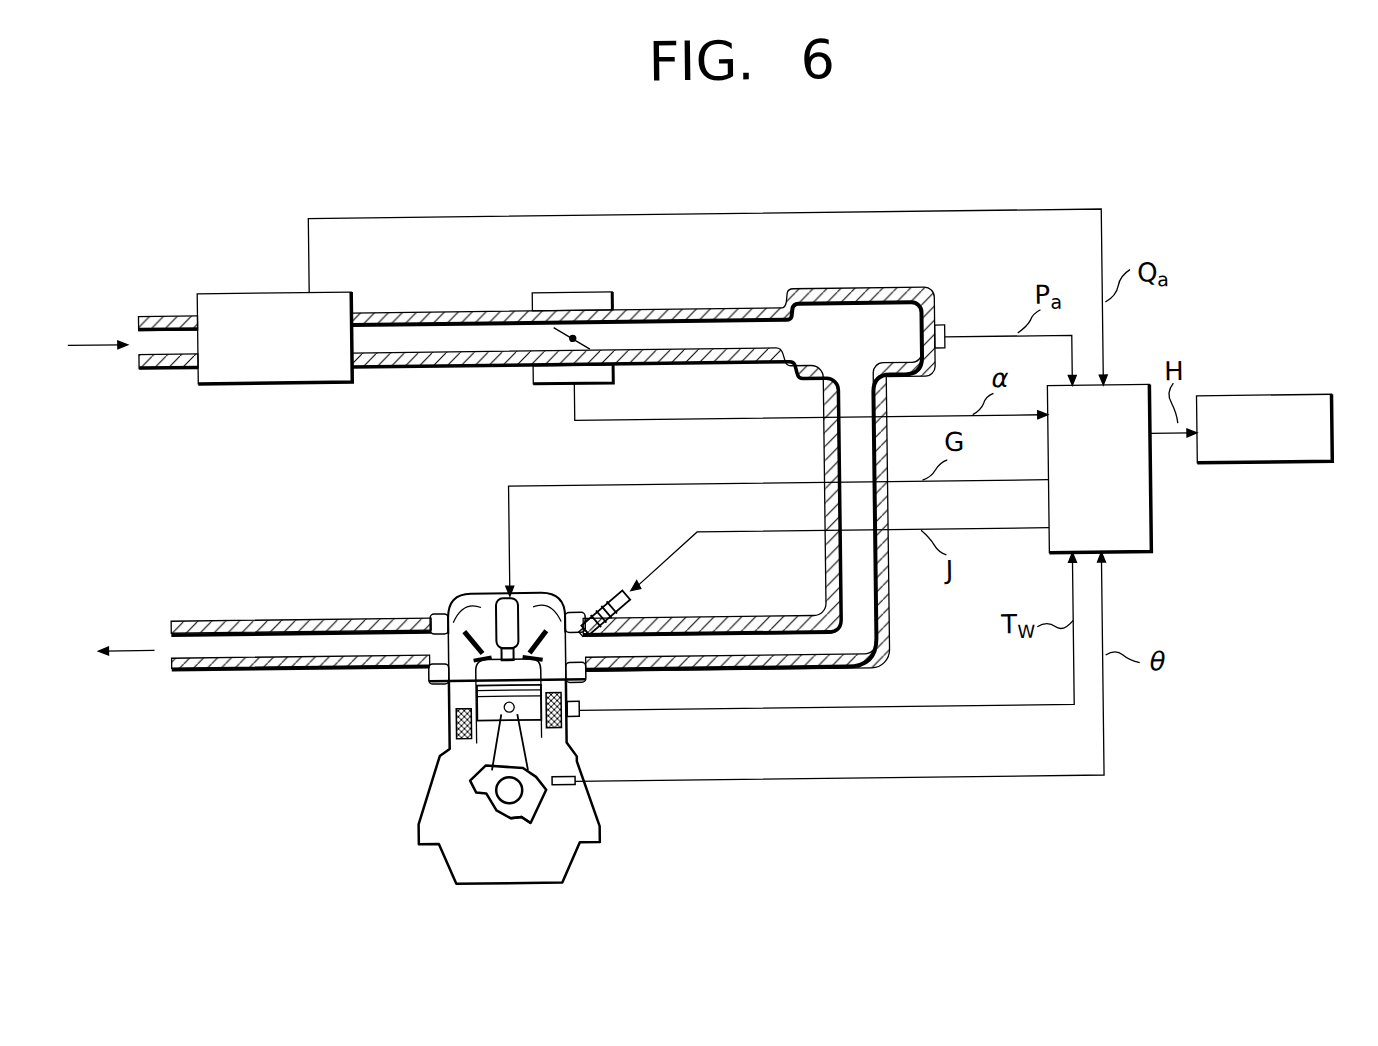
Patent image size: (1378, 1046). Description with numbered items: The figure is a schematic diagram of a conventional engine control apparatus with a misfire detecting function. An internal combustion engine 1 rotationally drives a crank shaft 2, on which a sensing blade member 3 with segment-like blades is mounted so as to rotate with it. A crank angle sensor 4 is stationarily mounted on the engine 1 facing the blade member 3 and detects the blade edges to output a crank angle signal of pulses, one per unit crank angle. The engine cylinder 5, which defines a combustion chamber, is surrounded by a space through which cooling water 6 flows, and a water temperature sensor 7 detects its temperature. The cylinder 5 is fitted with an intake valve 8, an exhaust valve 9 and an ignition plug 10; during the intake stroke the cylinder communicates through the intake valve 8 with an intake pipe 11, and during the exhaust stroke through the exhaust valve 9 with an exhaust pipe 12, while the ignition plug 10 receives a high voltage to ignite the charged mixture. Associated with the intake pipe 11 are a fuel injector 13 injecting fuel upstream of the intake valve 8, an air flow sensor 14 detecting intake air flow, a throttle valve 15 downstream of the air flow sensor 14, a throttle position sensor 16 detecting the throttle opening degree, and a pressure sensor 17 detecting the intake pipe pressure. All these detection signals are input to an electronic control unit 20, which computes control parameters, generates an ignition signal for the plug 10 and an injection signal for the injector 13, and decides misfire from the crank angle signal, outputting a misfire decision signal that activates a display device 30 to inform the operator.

The internal combustion engine 1 is at (573, 867).
The crank shaft 2 is at (464, 776).
The sensing blade member 3 is at (518, 815).
The crank angle sensor 4 is at (567, 772).
The engine cylinder 5 is at (474, 688).
The cooling water 6 is at (455, 720).
The water temperature sensor 7 is at (573, 699).
The intake valve 8 is at (539, 608).
The exhaust valve 9 is at (470, 590).
The ignition plug 10 is at (512, 548).
The intake pipe 11 is at (753, 619).
The exhaust pipe 12 is at (261, 622).
The fuel injector 13 is at (622, 606).
The air flow sensor 14 is at (286, 380).
The throttle valve 15 is at (592, 347).
The throttle position sensor 16 is at (551, 381).
The pressure sensor 17 is at (947, 335).
The electronic control unit 20 is at (1151, 512).
The display device 30 is at (1258, 470).